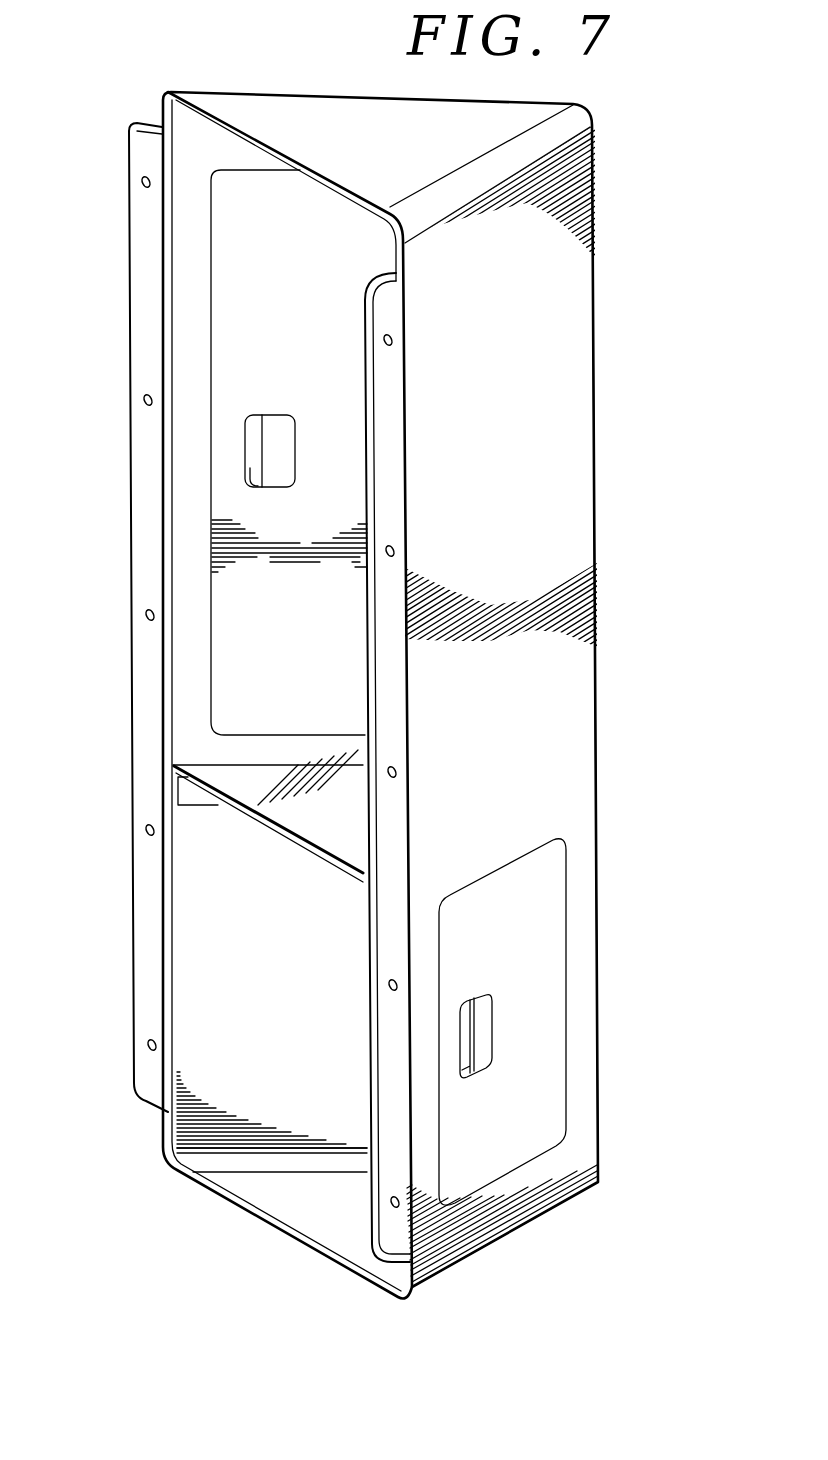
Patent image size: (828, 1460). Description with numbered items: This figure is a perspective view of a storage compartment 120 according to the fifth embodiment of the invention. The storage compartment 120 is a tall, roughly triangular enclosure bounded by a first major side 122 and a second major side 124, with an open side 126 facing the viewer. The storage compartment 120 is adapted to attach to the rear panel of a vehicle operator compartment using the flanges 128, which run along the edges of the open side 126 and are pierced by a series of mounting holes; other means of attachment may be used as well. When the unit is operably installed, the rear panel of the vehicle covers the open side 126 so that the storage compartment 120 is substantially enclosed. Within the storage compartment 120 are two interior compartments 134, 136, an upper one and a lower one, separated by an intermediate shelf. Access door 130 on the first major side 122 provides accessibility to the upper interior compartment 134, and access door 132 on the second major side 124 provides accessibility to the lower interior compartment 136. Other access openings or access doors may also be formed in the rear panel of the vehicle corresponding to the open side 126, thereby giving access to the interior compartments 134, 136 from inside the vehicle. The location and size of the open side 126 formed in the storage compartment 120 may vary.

The storage compartment 120 is at (652, 511).
The first major side 122 is at (320, 100).
The second major side 124 is at (573, 325).
The open side 126 is at (313, 1213).
The flanges 128 is at (143, 280).
The access door 130 is at (313, 328).
The access door 132 is at (542, 1027).
The interior compartment 134 is at (195, 725).
The interior compartment 136 is at (213, 922).